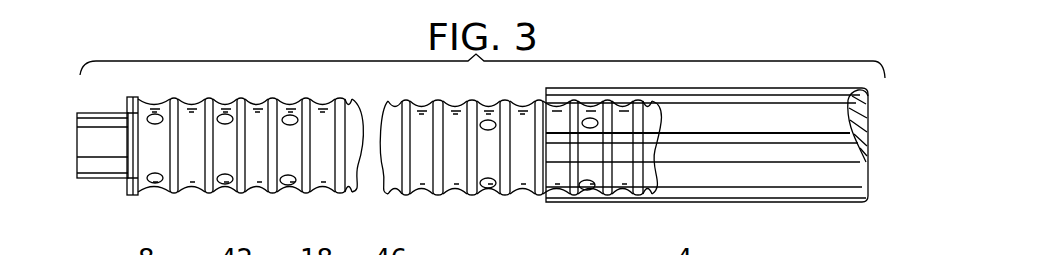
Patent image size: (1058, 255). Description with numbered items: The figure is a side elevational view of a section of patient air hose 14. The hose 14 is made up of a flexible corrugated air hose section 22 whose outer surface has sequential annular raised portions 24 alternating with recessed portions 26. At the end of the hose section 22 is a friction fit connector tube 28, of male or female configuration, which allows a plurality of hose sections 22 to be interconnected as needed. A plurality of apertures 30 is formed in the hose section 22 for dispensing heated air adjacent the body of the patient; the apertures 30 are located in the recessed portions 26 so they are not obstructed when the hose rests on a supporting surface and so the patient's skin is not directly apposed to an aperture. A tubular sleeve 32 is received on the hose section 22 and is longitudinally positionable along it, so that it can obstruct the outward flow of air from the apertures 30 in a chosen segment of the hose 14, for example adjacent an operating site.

The air hose 14 is at (680, 159).
The corrugated air hose section 22 is at (399, 129).
The annular raised portion 24 is at (341, 100).
The annular recessed portion 26 is at (291, 110).
The friction fit connector tube 28 is at (80, 113).
The aperture 30 is at (232, 114).
The tubular sleeve 32 is at (815, 190).